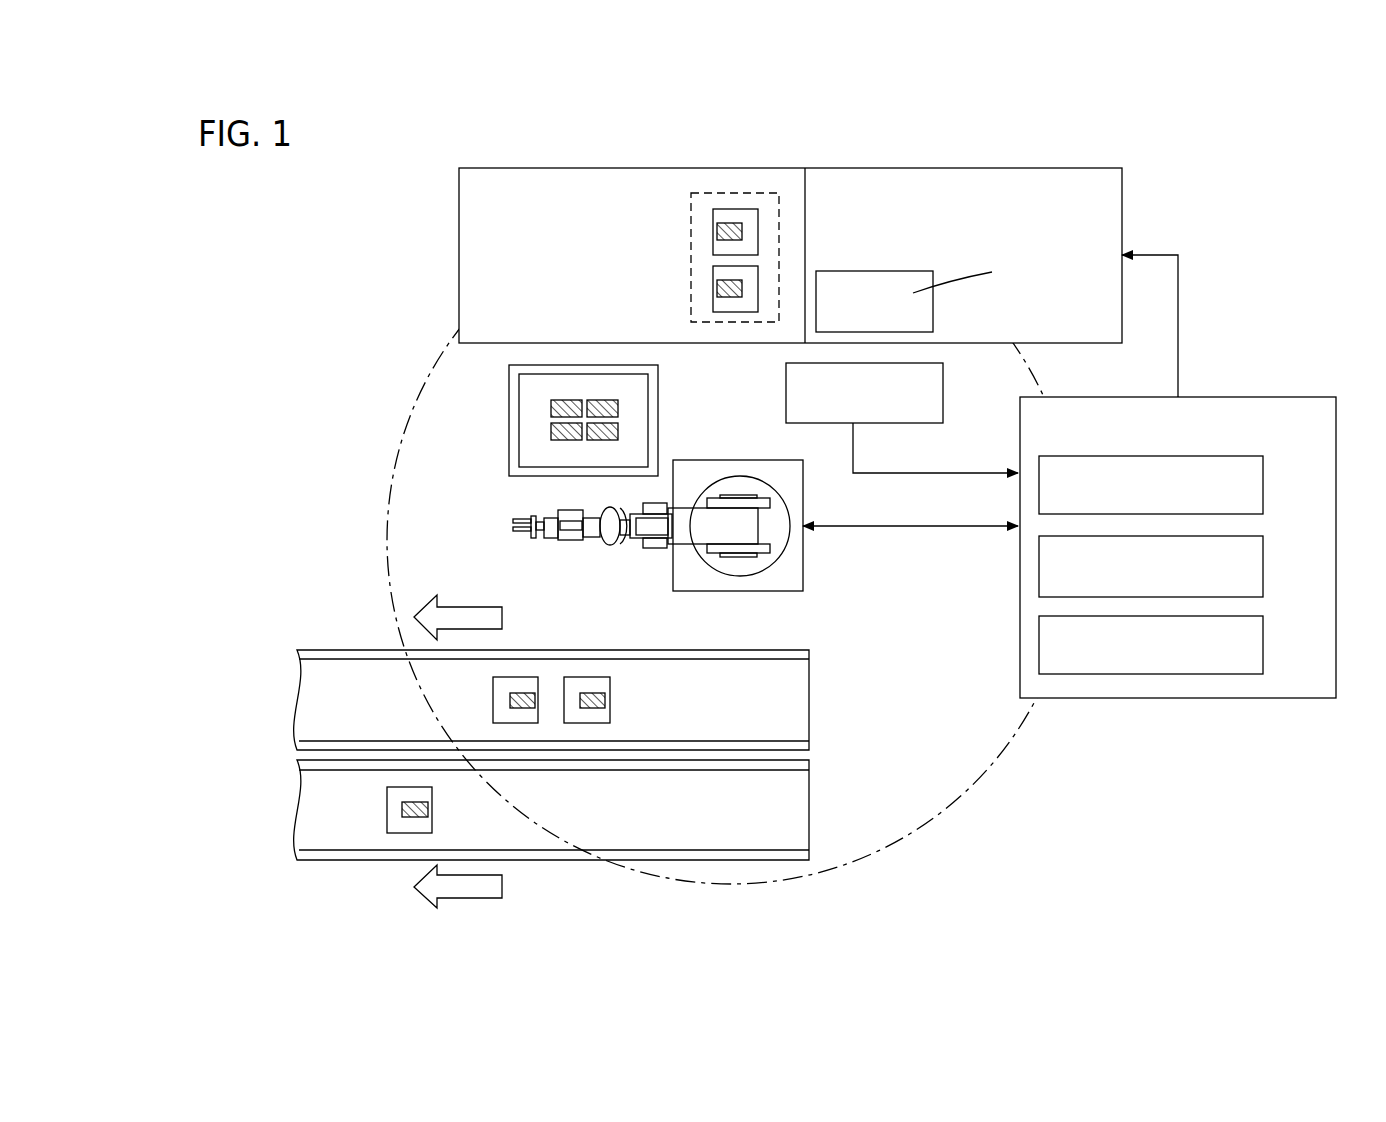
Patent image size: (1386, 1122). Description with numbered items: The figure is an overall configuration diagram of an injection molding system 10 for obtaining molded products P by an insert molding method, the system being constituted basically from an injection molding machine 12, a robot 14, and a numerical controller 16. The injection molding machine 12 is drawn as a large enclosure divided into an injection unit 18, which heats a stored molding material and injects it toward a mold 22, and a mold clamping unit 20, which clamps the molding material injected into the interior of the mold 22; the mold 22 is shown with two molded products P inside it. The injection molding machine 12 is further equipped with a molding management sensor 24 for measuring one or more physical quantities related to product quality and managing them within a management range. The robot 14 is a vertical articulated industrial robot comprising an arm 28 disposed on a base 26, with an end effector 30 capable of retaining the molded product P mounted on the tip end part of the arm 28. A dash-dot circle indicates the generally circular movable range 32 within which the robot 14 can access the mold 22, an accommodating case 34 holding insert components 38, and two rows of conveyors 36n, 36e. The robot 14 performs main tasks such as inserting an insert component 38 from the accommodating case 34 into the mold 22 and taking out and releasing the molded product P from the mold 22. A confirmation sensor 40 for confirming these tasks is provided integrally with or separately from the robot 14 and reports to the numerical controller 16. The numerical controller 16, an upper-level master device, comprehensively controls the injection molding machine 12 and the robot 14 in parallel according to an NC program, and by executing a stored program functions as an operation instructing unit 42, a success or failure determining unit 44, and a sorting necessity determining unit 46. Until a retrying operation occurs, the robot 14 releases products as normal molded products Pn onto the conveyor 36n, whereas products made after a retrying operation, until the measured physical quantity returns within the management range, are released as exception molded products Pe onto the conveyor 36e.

The injection molding system 10 is at (323, 240).
The injection molding machine 12 is at (845, 128).
The robot 14 is at (656, 502).
The numerical controller 16 is at (1178, 519).
The injection unit 18 is at (873, 168).
The mold clamping unit 20 is at (728, 168).
The mold 22 is at (707, 292).
The molding management sensor 24 is at (887, 271).
The base 26 is at (790, 502).
The arm 28 is at (627, 528).
The end effector 30 is at (518, 537).
The movable range 32 is at (403, 428).
The accommodating case 34 is at (575, 420).
The conveyor 36n is at (583, 700).
The conveyor 36e is at (583, 810).
The insert component 38 is at (551, 431).
The confirmation sensor 40 is at (943, 390).
The operation instructing unit 42 is at (1263, 487).
The success or failure determining unit 44 is at (1263, 568).
The sorting necessity determining unit 46 is at (1263, 648).
The molded product P is at (713, 245).
The normal molded product Pn is at (493, 688).
The exception molded product Pe is at (387, 808).